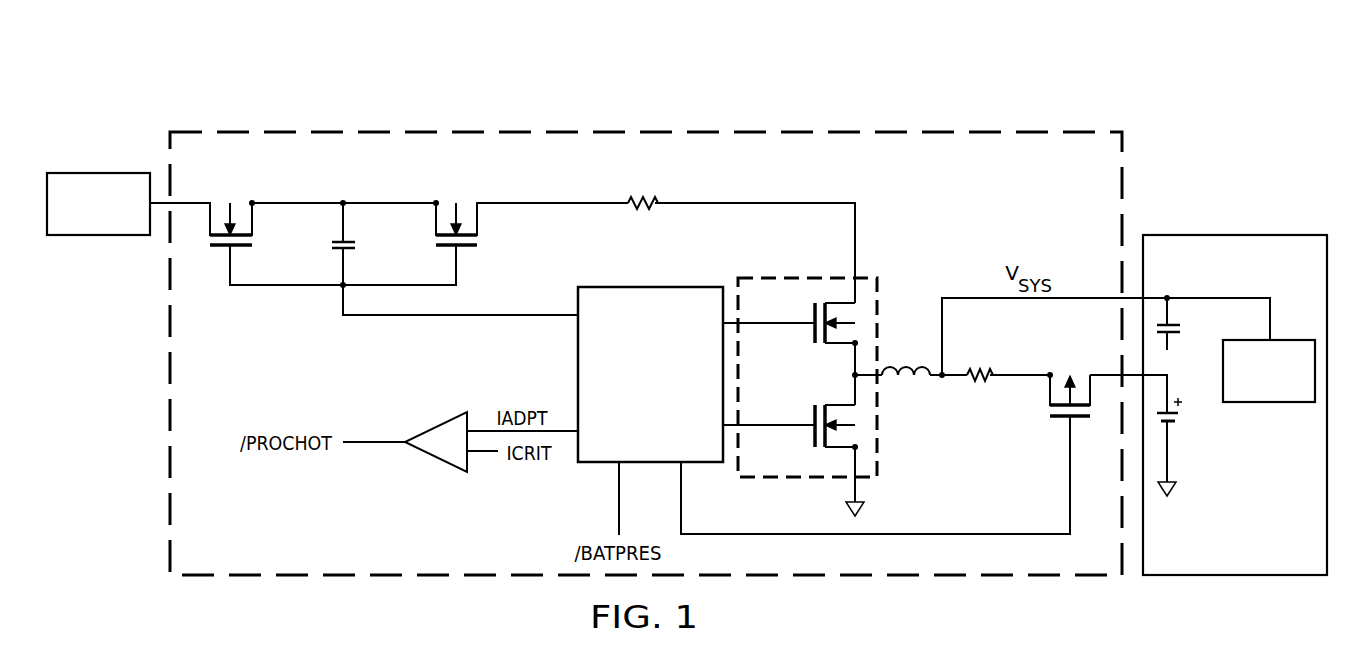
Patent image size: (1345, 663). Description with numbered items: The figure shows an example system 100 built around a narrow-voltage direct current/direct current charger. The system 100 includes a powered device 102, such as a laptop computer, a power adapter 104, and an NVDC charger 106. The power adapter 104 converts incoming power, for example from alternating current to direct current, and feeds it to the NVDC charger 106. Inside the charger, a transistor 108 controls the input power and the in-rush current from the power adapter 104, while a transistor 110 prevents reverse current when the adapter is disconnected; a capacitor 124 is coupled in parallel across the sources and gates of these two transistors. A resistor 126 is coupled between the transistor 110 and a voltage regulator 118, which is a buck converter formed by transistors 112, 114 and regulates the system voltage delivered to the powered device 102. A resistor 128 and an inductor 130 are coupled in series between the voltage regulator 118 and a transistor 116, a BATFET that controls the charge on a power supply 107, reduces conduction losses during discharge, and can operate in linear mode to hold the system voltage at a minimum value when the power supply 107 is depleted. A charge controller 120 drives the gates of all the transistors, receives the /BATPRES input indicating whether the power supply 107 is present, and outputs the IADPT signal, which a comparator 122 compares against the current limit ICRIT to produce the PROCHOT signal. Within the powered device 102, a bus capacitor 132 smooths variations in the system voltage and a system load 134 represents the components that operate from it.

The system 100 is at (944, 85).
The powered device 102 is at (1243, 232).
The power adapter 104 is at (100, 172).
The NVDC charger 106 is at (521, 130).
The power supply 107 is at (1178, 416).
The transistor 108 is at (220, 248).
The transistor 110 is at (470, 249).
The transistor 112 is at (812, 315).
The transistor 114 is at (812, 435).
The transistor 116 is at (1083, 421).
The voltage regulator 118 is at (794, 276).
The charge controller 120 is at (632, 416).
The comparator 122 is at (435, 458).
The capacitor 124 is at (330, 243).
The resistor 126 is at (638, 200).
The resistor 128 is at (982, 385).
The inductor 130 is at (911, 357).
The bus capacitor 132 is at (1178, 330).
The system load 134 is at (1282, 404).